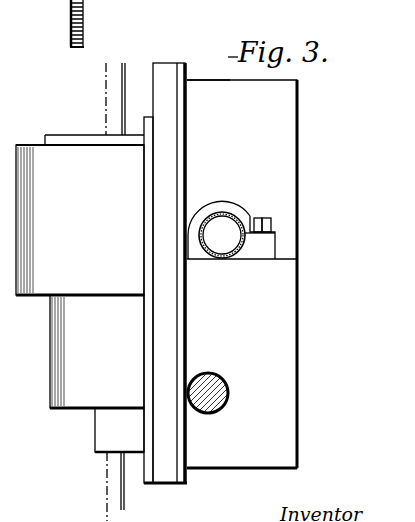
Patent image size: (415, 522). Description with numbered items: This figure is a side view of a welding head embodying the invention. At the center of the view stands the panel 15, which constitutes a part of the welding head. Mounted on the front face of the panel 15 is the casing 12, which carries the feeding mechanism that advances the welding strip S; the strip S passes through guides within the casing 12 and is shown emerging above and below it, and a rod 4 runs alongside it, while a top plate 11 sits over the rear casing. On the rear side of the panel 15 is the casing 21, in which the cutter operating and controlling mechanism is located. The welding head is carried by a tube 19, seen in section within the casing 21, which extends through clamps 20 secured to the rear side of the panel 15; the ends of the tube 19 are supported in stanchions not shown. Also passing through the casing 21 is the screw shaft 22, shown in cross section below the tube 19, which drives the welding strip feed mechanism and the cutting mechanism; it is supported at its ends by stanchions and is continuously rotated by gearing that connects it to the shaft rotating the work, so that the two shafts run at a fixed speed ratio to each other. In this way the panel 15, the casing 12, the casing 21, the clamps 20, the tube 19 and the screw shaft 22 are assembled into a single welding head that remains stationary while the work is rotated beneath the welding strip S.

The rod 4 is at (102, 284).
The welding strip S is at (129, 276).
The top plate of casing 11 is at (202, 80).
The casing 12 is at (50, 280).
The panel 15 is at (171, 63).
The tube 19 is at (229, 259).
The clamps 20 is at (275, 228).
The casing 21 is at (268, 140).
The screw shaft 22 is at (215, 392).